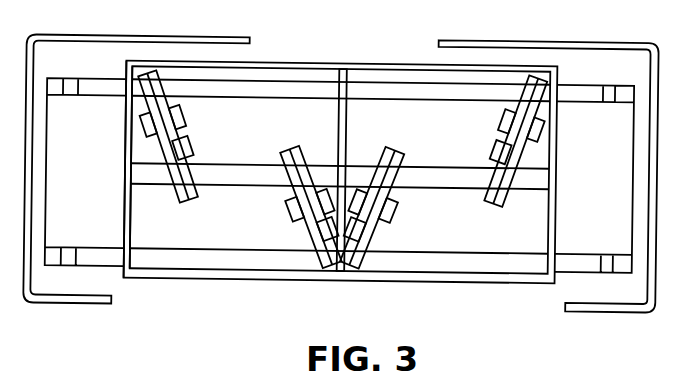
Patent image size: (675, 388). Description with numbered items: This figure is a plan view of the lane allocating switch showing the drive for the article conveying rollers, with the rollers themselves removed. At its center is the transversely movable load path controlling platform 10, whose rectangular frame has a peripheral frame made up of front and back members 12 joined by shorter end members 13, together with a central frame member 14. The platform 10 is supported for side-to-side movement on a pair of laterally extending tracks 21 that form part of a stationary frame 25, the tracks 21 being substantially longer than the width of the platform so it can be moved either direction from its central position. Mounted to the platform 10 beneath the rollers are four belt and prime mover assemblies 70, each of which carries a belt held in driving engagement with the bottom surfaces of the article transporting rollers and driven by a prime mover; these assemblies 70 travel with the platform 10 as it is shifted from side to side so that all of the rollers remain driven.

The load path controlling platform 10 is at (260, 303).
The front and back members 12 is at (295, 63).
The end members 13 is at (127, 208).
The central frame member 14 is at (343, 143).
The tracks 21 is at (110, 84).
The stationary frame 25 is at (561, 79).
The belt and prime mover assemblies 70 is at (313, 235).